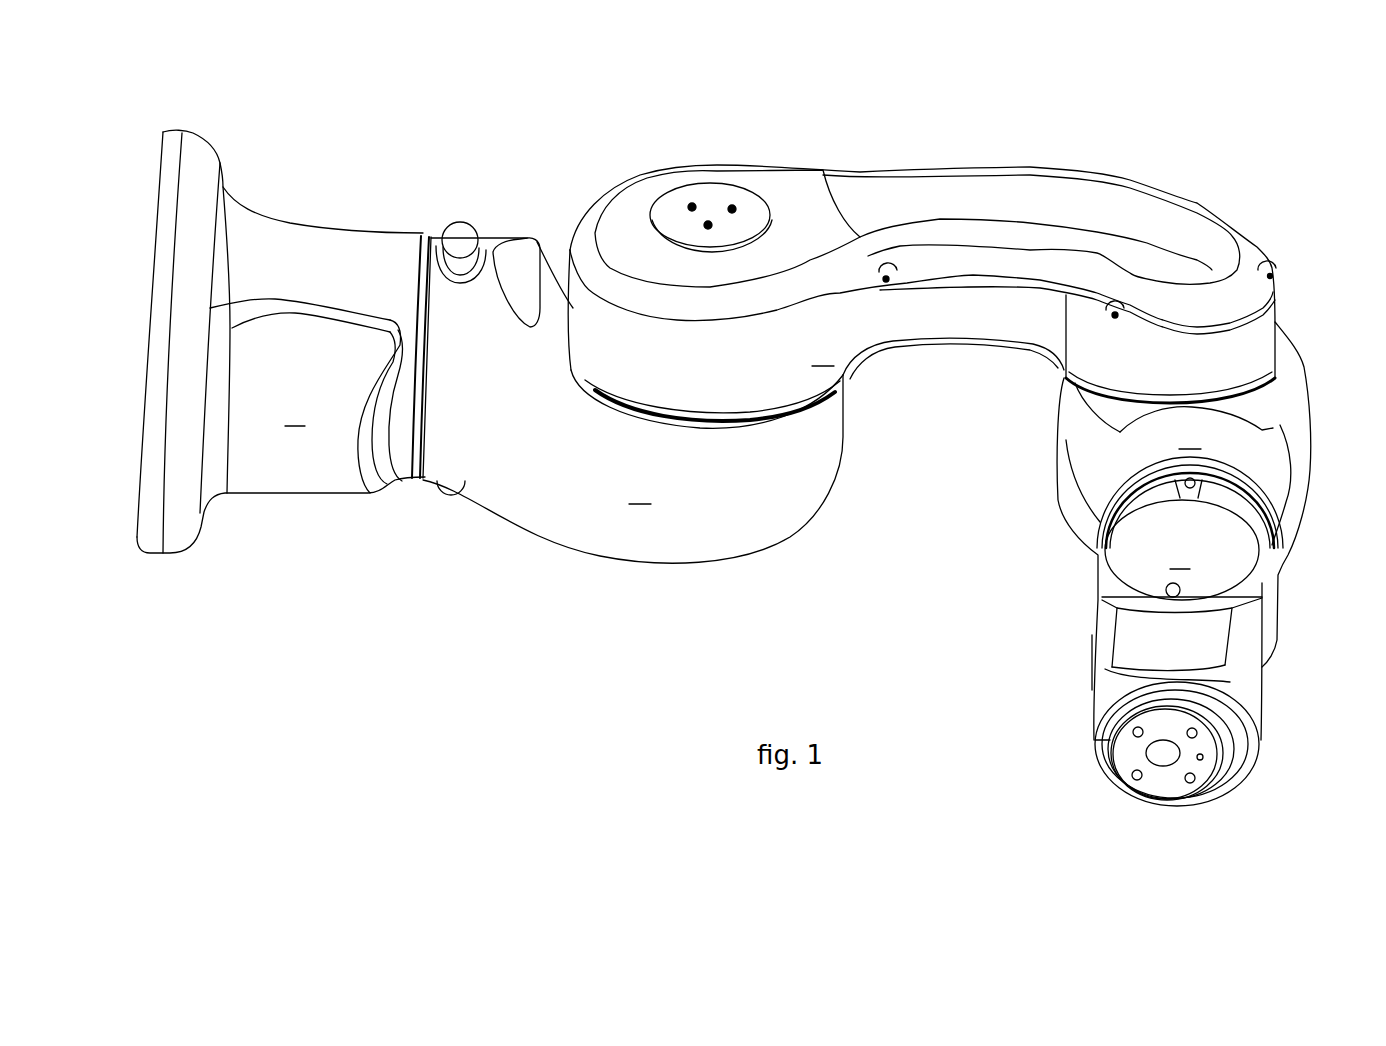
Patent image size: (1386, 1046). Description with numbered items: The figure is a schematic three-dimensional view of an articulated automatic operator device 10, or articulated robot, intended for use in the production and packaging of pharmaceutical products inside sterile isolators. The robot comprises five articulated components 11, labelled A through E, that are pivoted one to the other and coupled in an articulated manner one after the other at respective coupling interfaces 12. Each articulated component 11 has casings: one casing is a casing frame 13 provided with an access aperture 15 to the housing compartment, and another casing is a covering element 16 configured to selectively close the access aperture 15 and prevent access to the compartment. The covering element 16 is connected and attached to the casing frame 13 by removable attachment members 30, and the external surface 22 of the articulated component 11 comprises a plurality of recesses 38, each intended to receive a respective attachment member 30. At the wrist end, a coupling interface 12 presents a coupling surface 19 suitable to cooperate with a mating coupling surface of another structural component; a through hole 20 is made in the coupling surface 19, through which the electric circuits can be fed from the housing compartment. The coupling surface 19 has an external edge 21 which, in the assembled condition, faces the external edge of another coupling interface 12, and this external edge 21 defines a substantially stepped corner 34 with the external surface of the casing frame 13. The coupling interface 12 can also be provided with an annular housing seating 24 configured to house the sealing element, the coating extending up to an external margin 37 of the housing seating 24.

The articulated automatic operator device 10 is at (738, 459).
The articulated component 11 is at (835, 455).
The coupling interface 12 is at (704, 438).
The casing frame 13 is at (307, 478).
The access aperture 15 is at (135, 540).
The covering element 16 is at (942, 192).
The coupling surface 19 is at (1165, 779).
The through hole 20 is at (1139, 789).
The external edge 21 is at (1200, 790).
The external surface 22 is at (927, 418).
The annular housing seating 24 is at (1218, 768).
The removable attachment member 30 is at (885, 283).
The corner 34 is at (1188, 805).
The external margin 37 is at (1202, 744).
The recess 38 is at (883, 268).